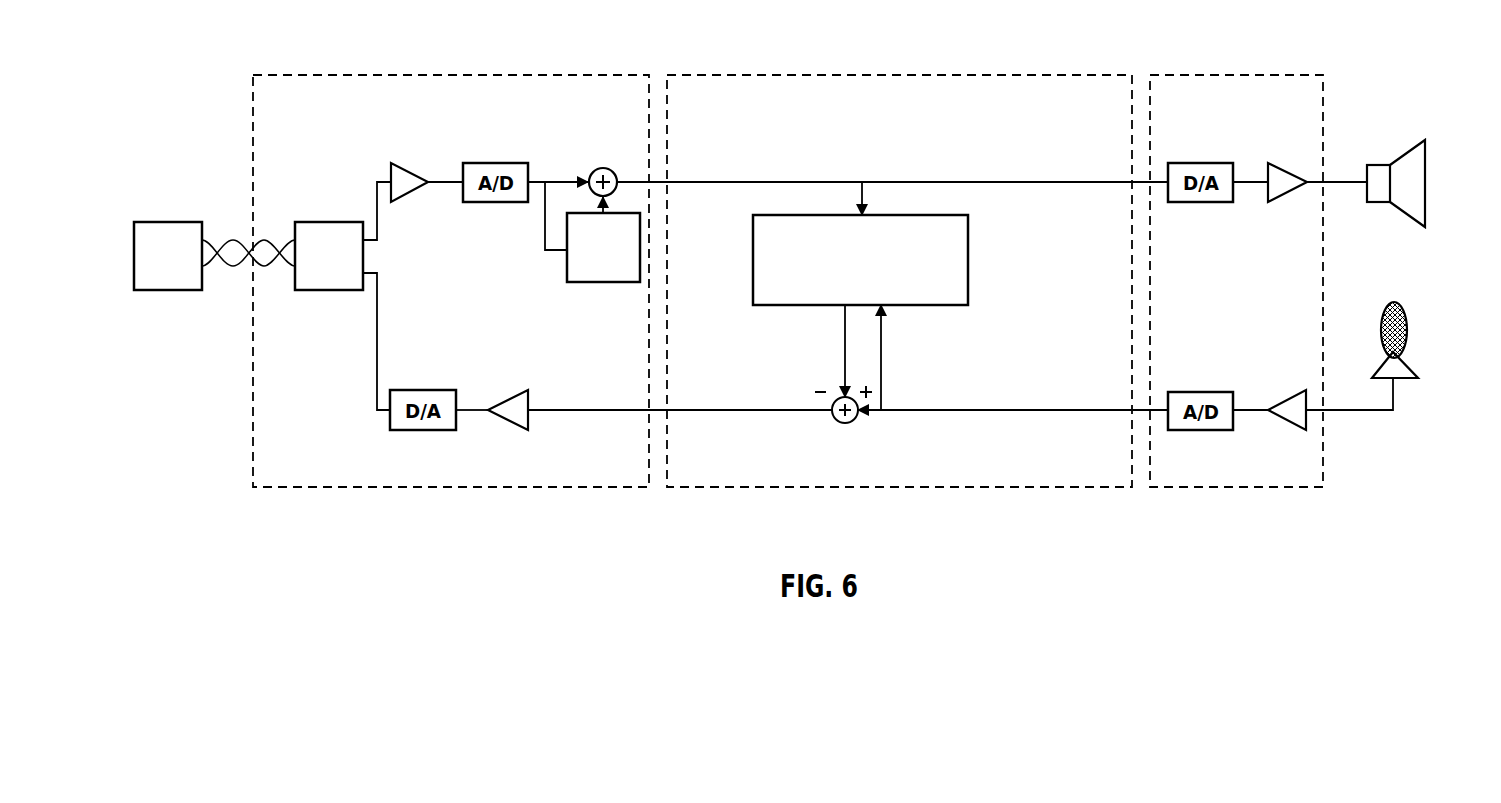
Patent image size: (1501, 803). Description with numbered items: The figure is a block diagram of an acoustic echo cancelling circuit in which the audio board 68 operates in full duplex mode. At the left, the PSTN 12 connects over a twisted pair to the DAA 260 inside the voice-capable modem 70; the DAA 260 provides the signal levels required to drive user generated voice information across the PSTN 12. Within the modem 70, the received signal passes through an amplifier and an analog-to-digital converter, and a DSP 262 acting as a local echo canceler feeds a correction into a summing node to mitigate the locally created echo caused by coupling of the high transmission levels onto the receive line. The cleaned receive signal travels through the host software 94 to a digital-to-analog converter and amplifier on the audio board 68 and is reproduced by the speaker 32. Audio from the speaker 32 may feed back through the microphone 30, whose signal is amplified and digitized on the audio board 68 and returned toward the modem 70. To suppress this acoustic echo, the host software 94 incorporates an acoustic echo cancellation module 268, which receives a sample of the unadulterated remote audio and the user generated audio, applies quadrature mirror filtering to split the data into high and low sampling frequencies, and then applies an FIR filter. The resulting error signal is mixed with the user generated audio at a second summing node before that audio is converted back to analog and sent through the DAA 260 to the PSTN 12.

The PSTN 12 is at (150, 222).
The DAA 260 is at (300, 222).
The voice-capable modem 70 is at (387, 75).
The host software 94 is at (785, 75).
The audio board 68 is at (1187, 75).
The DSP 262 is at (564, 262).
The acoustic echo cancellation module 268 is at (750, 264).
The speaker 32 is at (1427, 178).
The microphone 30 is at (1409, 330).